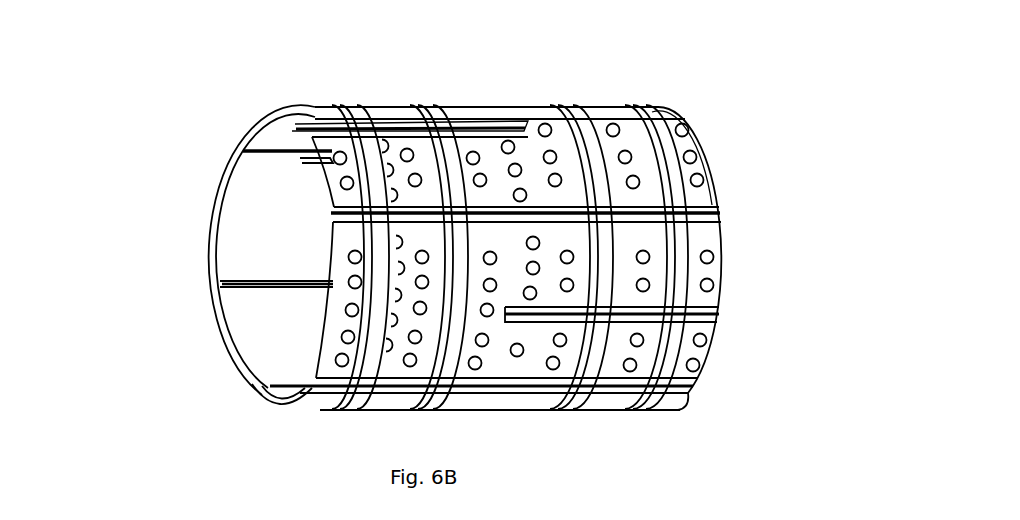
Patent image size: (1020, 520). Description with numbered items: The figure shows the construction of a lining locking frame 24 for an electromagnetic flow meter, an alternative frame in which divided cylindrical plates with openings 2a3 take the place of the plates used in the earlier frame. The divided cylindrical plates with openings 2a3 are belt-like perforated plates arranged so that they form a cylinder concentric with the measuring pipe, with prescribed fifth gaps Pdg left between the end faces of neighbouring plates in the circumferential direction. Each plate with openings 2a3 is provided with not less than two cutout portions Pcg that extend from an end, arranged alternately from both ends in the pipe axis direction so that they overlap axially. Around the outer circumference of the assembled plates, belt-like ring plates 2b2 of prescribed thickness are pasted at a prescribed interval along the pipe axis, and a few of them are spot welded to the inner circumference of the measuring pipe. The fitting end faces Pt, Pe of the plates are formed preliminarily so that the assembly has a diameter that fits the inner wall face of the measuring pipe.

The lining locking frame 24 is at (450, 92).
The divided cylindrical plates with openings 2a3 is at (237, 187).
The belt-like ring plates 2b2 is at (640, 98).
The cutout portions Pcg is at (302, 130).
The fifth gaps Pdg is at (243, 150).
The fitting end face Pt is at (330, 213).
The fitting end face Pe is at (722, 220).